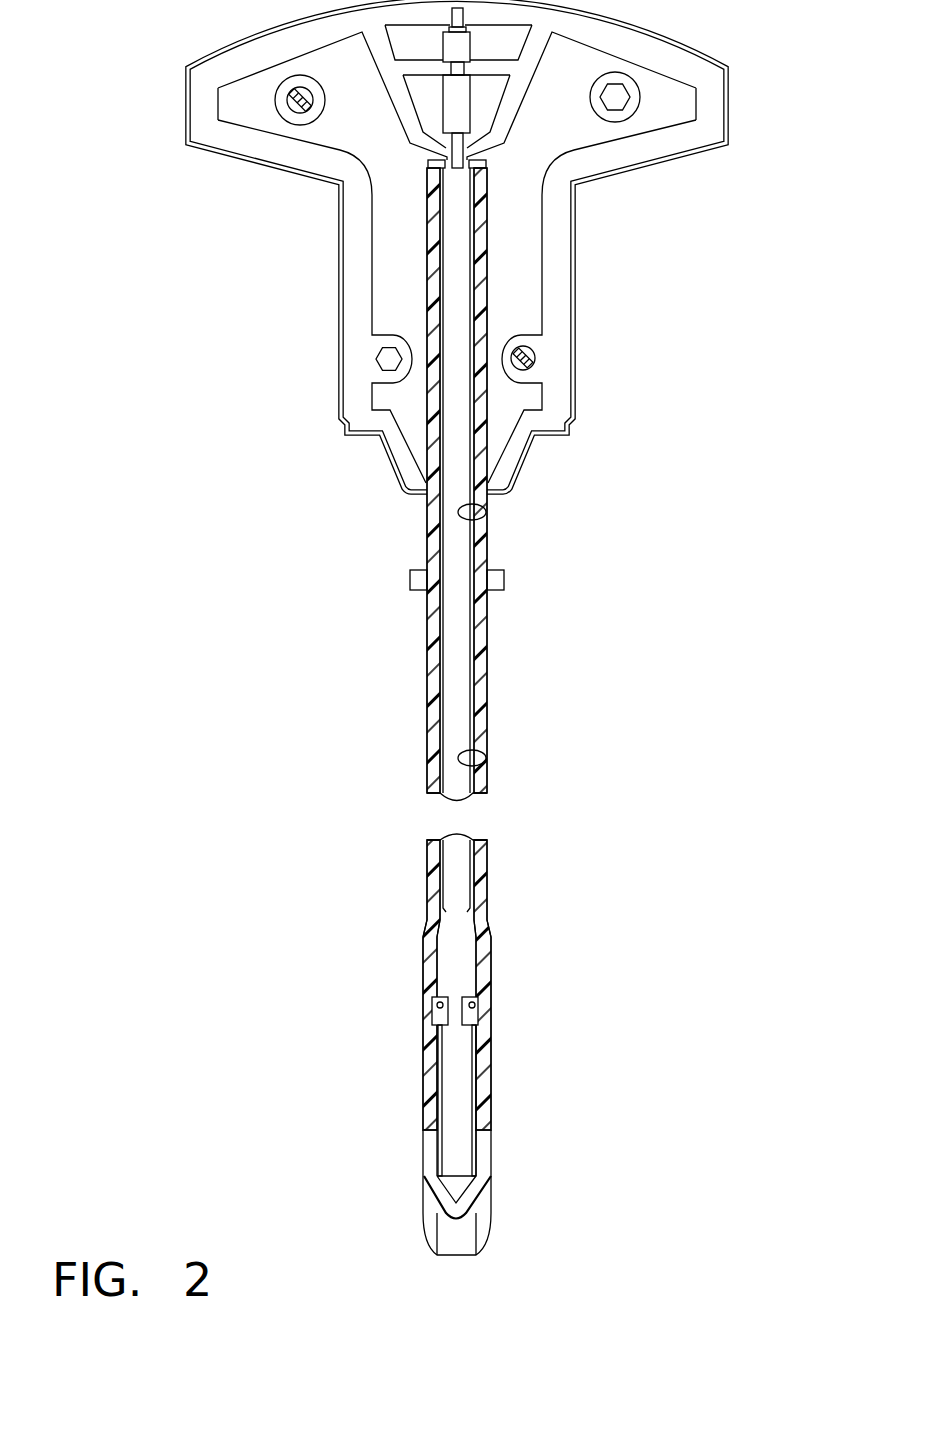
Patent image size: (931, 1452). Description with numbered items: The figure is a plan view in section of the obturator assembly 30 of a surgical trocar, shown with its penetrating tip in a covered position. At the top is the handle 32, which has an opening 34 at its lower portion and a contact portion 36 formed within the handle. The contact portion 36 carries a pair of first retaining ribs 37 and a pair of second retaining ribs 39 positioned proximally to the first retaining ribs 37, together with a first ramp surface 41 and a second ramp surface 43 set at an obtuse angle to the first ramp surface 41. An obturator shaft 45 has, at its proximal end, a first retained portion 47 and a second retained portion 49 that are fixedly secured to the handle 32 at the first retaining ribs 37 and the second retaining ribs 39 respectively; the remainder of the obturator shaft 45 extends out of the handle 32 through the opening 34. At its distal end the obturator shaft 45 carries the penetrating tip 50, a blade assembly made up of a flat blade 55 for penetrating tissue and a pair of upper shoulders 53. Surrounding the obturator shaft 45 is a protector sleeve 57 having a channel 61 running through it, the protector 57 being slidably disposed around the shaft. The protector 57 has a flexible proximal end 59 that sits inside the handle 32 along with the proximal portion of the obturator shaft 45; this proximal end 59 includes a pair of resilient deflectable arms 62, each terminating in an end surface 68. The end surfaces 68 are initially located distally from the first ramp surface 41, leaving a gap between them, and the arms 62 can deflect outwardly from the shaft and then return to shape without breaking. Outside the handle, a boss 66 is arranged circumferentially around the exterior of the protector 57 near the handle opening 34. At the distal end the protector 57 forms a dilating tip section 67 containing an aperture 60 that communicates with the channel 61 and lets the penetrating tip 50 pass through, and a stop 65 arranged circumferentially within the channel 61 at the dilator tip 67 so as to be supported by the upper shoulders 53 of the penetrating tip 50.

The obturator assembly 30 is at (612, 343).
The handle 32 is at (342, 260).
The opening 34 is at (487, 515).
The contact portion 36 is at (352, 62).
The first retaining ribs 37 is at (430, 142).
The second retaining ribs 39 is at (508, 67).
The first ramp surface 41 is at (470, 146).
The second ramp surface 43 is at (523, 97).
The obturator shaft 45 is at (462, 673).
The first retained portion 47 is at (468, 146).
The second retained portion 49 is at (457, 67).
The penetrating tip 50 is at (484, 1192).
The upper shoulders 53 is at (472, 1020).
The flat blade 55 is at (470, 1218).
The protector sleeve 57 is at (432, 700).
The flexible proximal end 59 is at (502, 242).
The aperture 60 is at (458, 1255).
The channel 61 is at (487, 762).
The deflectable arms 62 is at (428, 283).
The stop 65 is at (437, 1005).
The boss 66 is at (410, 582).
The dilating tip section 67 is at (432, 1225).
The end surface 68 is at (480, 165).